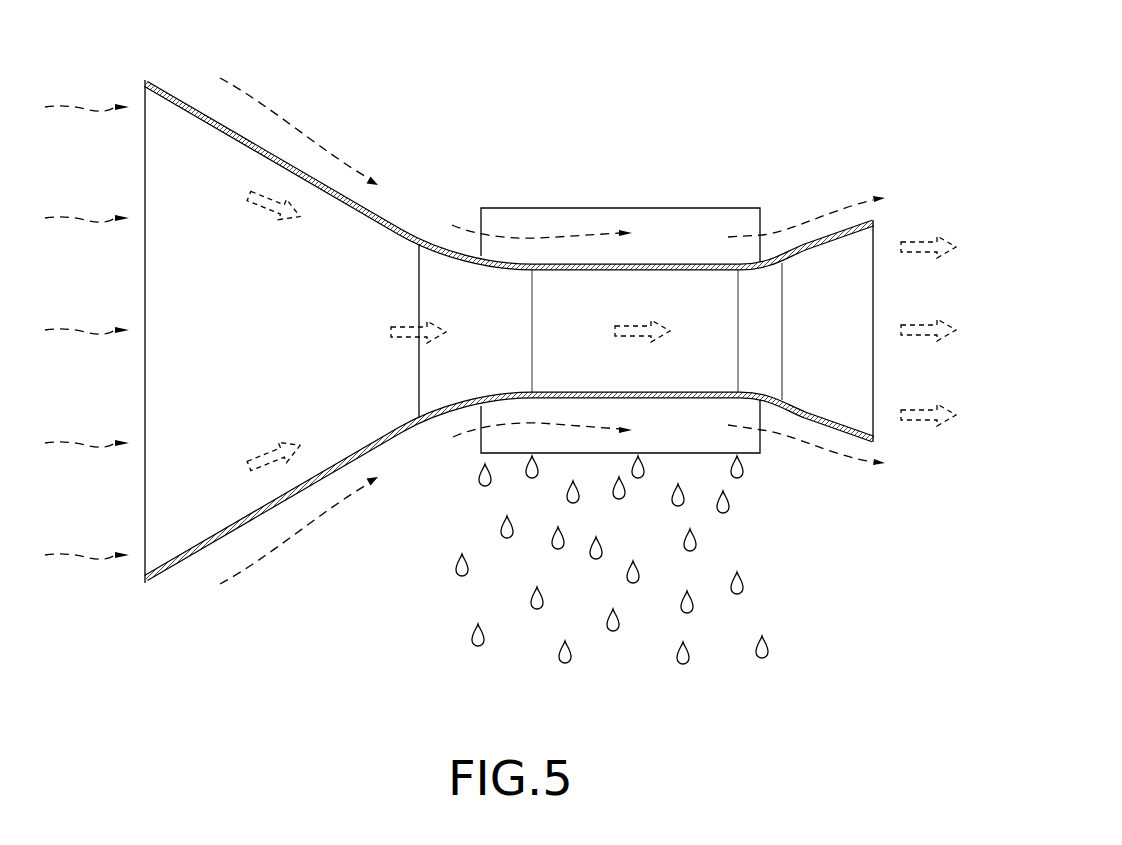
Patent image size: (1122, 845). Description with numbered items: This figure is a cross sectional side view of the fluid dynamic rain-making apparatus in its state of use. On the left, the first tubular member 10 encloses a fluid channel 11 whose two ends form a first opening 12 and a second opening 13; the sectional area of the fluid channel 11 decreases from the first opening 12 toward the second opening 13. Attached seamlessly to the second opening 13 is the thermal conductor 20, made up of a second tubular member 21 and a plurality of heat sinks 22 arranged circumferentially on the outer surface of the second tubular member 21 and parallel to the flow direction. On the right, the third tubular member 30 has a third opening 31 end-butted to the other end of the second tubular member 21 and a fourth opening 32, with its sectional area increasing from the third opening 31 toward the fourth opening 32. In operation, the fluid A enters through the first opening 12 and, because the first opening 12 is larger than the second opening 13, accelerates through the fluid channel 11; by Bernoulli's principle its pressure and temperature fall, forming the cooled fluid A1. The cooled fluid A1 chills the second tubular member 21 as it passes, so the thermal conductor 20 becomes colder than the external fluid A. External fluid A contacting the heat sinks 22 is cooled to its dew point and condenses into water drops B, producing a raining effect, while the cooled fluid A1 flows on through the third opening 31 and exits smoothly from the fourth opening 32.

The first tubular member 10 is at (278, 153).
The fluid channel 11 is at (172, 350).
The first opening 12 is at (145, 196).
The second opening 13 is at (420, 272).
The thermal conductor 20 is at (690, 153).
The second tubular member 21 is at (585, 265).
The heat sinks 22 is at (702, 213).
The third tubular member 30 is at (835, 233).
The third opening 31 is at (783, 283).
The fourth opening 32 is at (873, 267).
The fluid A is at (85, 107).
The cooled fluid A1 is at (404, 337).
The water drops B is at (768, 655).